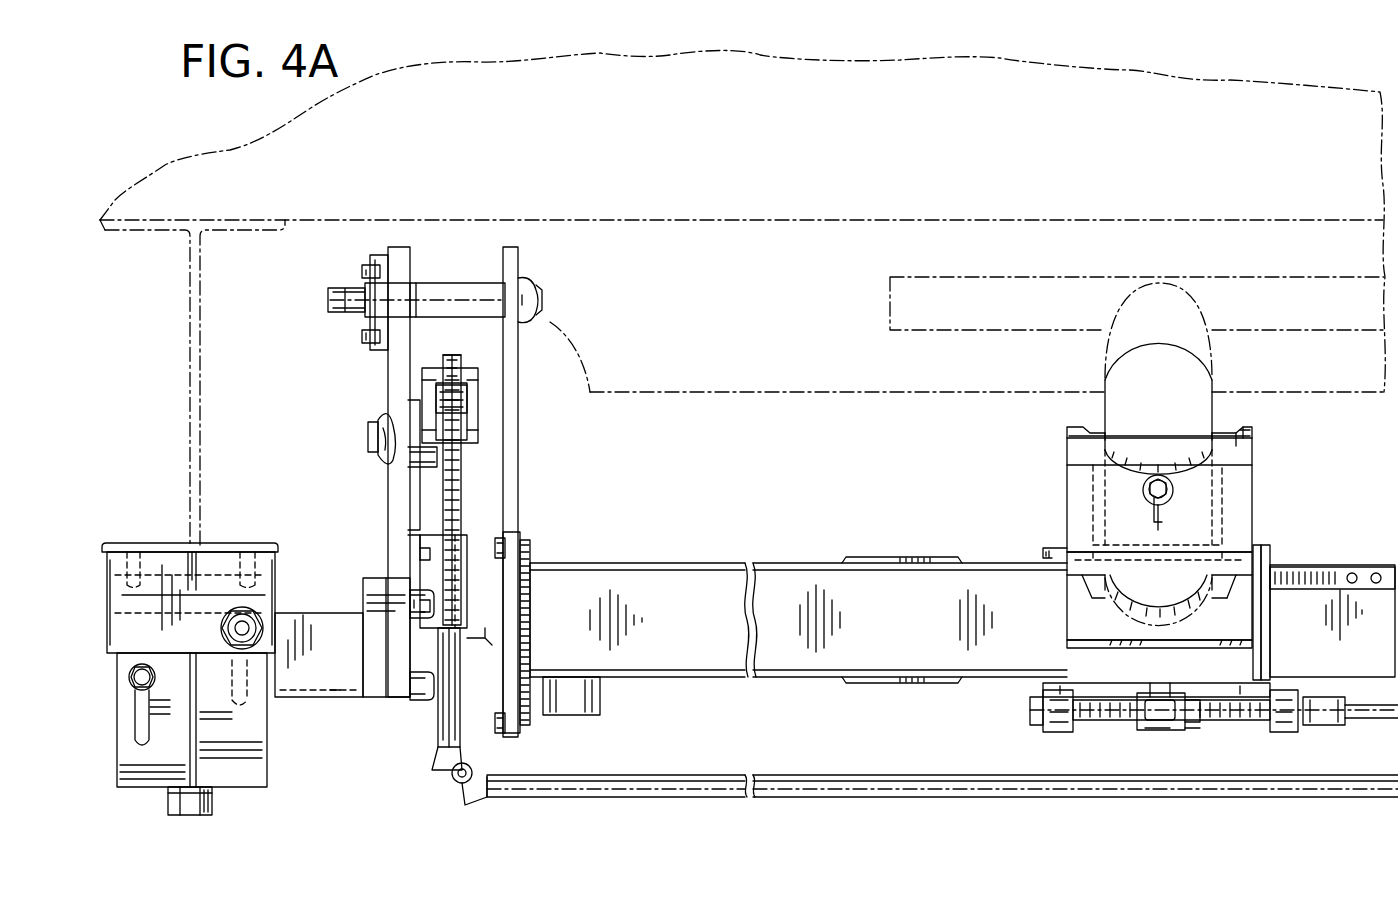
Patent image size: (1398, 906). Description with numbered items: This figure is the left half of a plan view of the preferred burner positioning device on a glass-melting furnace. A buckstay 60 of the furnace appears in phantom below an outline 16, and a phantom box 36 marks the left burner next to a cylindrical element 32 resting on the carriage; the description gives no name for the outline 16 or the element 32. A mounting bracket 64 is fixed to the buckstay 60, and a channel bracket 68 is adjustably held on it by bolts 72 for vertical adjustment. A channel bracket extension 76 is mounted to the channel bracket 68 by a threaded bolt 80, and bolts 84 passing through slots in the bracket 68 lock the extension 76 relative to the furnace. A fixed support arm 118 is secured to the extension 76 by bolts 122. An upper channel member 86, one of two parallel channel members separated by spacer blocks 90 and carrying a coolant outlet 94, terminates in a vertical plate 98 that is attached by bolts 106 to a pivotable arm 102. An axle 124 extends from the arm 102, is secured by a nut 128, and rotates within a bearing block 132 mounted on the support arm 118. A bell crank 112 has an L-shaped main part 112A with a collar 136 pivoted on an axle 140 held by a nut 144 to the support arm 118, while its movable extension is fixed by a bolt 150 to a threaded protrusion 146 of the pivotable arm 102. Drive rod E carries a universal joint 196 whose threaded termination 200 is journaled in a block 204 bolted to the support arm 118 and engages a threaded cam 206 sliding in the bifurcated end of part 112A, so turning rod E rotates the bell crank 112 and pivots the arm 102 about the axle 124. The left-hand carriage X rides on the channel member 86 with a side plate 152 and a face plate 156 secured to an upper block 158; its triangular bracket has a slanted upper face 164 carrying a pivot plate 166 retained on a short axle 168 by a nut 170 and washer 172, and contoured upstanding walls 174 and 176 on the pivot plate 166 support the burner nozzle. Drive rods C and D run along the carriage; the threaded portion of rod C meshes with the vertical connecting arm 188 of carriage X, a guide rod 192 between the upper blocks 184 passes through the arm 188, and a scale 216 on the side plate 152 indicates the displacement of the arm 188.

The aircraft fuselage outline 16 is at (1172, 80).
The buckstay 60 is at (190, 378).
The left burner 36 is at (904, 306).
The pipe 32 is at (1093, 370).
The slanted upper face 164 is at (1085, 498).
The contoured upstanding wall 176 is at (1245, 436).
The nut 170 is at (1148, 490).
The washer 172 is at (1168, 490).
The short axle 168 is at (1160, 500).
The left-hand carriage X is at (1266, 505).
The pivot plate 166 is at (1075, 574).
The contoured upstanding wall 174 is at (1075, 600).
The face plate 156 is at (1270, 556).
The upper block 158 is at (1263, 655).
The drive rod D is at (1396, 568).
The upper channel member 86 is at (913, 632).
The spacer block 90 is at (893, 556).
The coolant outlet 94 is at (596, 708).
The scale 216 is at (1105, 683).
The guide rod 192 is at (1115, 722).
The upper block 184 is at (1060, 732).
The vertical connecting arm 188 is at (1182, 730).
The carriage side plate 152 is at (1290, 688).
The drive rod C is at (1380, 712).
The drive rod E is at (1286, 792).
The mounting bracket 64 is at (205, 555).
The bolt 72 is at (273, 565).
The channel bracket 68 is at (262, 760).
The bolt 84 is at (147, 675).
The threaded bolt 80 is at (208, 800).
The channel bracket extension 76 is at (345, 697).
The fixed support arm 118 is at (398, 512).
The bolt 150 is at (398, 633).
The bolt 122 is at (418, 598).
The collar 136 is at (420, 470).
The axle 140 is at (368, 437).
The nut 144 is at (377, 422).
The bearing block 132 is at (380, 262).
The axle 124 is at (418, 295).
The nut 128 is at (534, 290).
The pivotable arm 102 is at (516, 474).
The bell crank 112 is at (470, 465).
The threaded termination 200 is at (453, 362).
The threaded cam 206 is at (470, 400).
The L-shaped main part 112A is at (476, 428).
The block 204 is at (467, 585).
The threaded protrusion 146 is at (486, 640).
The universal joint 196 is at (448, 792).
The vertical plate 98 is at (530, 548).
The bolt 106 is at (503, 535).